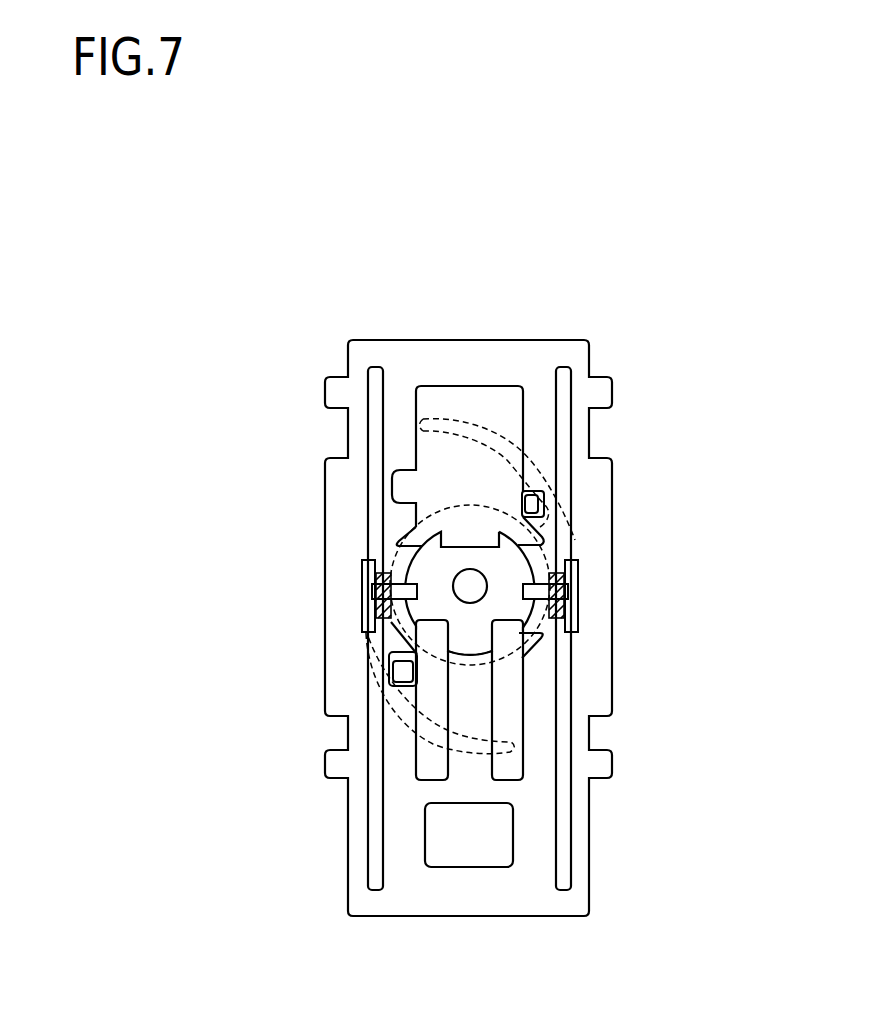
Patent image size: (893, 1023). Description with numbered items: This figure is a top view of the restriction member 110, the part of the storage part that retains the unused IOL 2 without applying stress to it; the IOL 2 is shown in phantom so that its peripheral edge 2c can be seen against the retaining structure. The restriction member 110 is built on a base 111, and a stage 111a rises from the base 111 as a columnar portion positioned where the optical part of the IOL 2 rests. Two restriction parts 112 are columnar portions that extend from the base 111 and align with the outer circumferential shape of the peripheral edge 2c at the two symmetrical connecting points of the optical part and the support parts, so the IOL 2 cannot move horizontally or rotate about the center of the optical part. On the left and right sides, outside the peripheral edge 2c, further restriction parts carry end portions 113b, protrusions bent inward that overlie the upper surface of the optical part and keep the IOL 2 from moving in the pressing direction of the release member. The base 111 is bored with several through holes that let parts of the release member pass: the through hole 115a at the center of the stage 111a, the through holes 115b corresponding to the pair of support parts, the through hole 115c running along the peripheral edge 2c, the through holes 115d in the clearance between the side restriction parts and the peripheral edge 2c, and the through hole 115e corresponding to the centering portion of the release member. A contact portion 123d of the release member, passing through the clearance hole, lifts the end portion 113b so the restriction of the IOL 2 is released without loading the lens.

The IOL 2 is at (508, 645).
The peripheral edge 2c is at (467, 663).
The restriction member 110 is at (608, 328).
The base 111 is at (388, 907).
The stage 111a is at (438, 572).
The restriction part 112 is at (530, 500).
The end portion 113b is at (372, 592).
The through hole 115a is at (470, 572).
The through hole 115b is at (489, 408).
The through hole 115c is at (383, 634).
The through hole 115d is at (360, 560).
The through hole 115e is at (461, 862).
The contact portion 123d is at (377, 605).